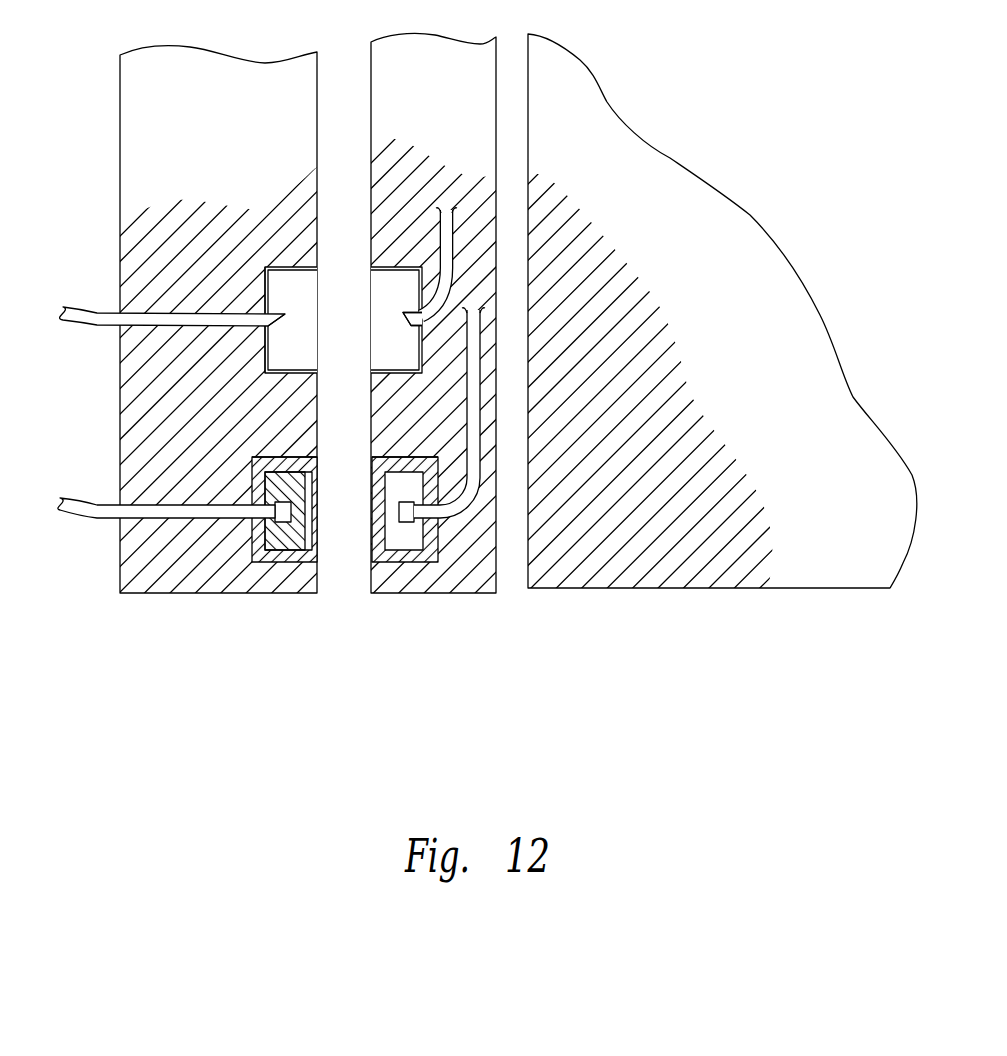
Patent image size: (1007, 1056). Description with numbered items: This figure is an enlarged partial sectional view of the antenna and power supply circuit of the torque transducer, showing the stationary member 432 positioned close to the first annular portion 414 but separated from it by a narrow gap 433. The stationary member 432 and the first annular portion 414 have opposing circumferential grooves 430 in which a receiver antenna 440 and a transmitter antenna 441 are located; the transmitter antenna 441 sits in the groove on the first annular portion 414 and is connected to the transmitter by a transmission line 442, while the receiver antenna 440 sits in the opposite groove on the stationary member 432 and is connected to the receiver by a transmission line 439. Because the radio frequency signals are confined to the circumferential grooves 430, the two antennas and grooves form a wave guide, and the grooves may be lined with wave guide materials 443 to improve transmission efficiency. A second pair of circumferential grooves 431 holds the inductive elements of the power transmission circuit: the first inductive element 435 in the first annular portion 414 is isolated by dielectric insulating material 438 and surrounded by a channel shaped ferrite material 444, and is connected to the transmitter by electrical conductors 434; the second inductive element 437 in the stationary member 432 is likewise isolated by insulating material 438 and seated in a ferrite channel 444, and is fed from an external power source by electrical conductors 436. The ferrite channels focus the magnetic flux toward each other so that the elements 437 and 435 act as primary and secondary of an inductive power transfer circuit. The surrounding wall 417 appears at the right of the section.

The first annular portion 414 is at (475, 573).
The outer wall 417 is at (806, 575).
The circumferential grooves 430 is at (386, 376).
The circumferential grooves 431 is at (316, 456).
The stationary member 432 is at (172, 570).
The narrow gap 433 is at (345, 601).
The electrical conductors 434 is at (480, 333).
The first inductive element 435 is at (420, 558).
The electrical conductors 436 is at (90, 500).
The second inductive element 437 is at (280, 555).
The dielectric insulating material 438 is at (295, 558).
The transmission line 439 is at (77, 306).
The receiver antenna 440 is at (265, 327).
The transmitter antenna 441 is at (418, 320).
The transmission line 442 is at (438, 228).
The wave guide materials 443 is at (265, 274).
The channel shaped ferrite material 444 is at (283, 556).